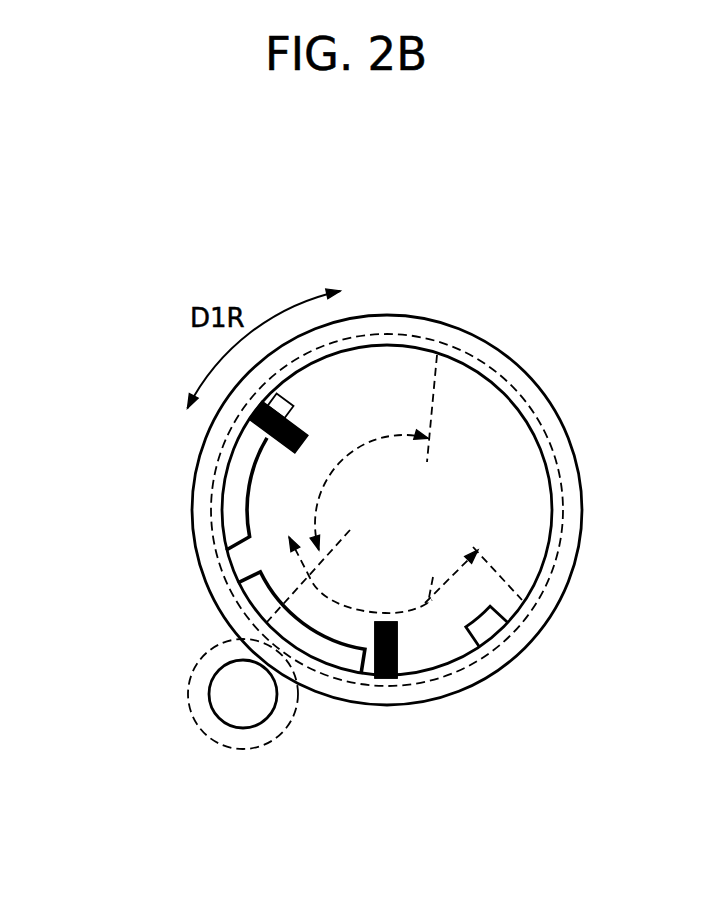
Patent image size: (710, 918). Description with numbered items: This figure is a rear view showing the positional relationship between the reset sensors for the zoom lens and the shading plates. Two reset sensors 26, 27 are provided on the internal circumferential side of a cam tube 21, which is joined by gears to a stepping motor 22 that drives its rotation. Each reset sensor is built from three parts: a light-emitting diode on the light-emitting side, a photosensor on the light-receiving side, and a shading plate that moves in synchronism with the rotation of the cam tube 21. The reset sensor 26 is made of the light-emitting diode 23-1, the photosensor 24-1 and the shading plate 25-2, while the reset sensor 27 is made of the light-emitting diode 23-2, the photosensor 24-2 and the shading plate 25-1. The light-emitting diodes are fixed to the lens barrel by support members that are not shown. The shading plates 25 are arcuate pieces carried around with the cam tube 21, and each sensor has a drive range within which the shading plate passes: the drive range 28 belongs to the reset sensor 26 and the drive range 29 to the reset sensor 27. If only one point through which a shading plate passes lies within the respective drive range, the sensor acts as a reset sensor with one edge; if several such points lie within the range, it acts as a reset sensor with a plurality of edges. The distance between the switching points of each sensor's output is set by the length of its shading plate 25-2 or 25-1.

The cam tube 21 is at (525, 413).
The stepping motor 22 is at (237, 712).
The light-emitting diode 23-1 is at (398, 645).
The light-emitting diode 23-2 is at (298, 428).
The photosensor 24-1 is at (474, 721).
The photosensor 24-2 is at (348, 345).
The shading plates 25 is at (202, 556).
The shading plate 25-1 is at (233, 491).
The shading plate 25-2 is at (262, 590).
The reset sensor 26 is at (474, 721).
The reset sensor 27 is at (348, 328).
The drive range 28 is at (430, 602).
The drive range 29 is at (375, 437).